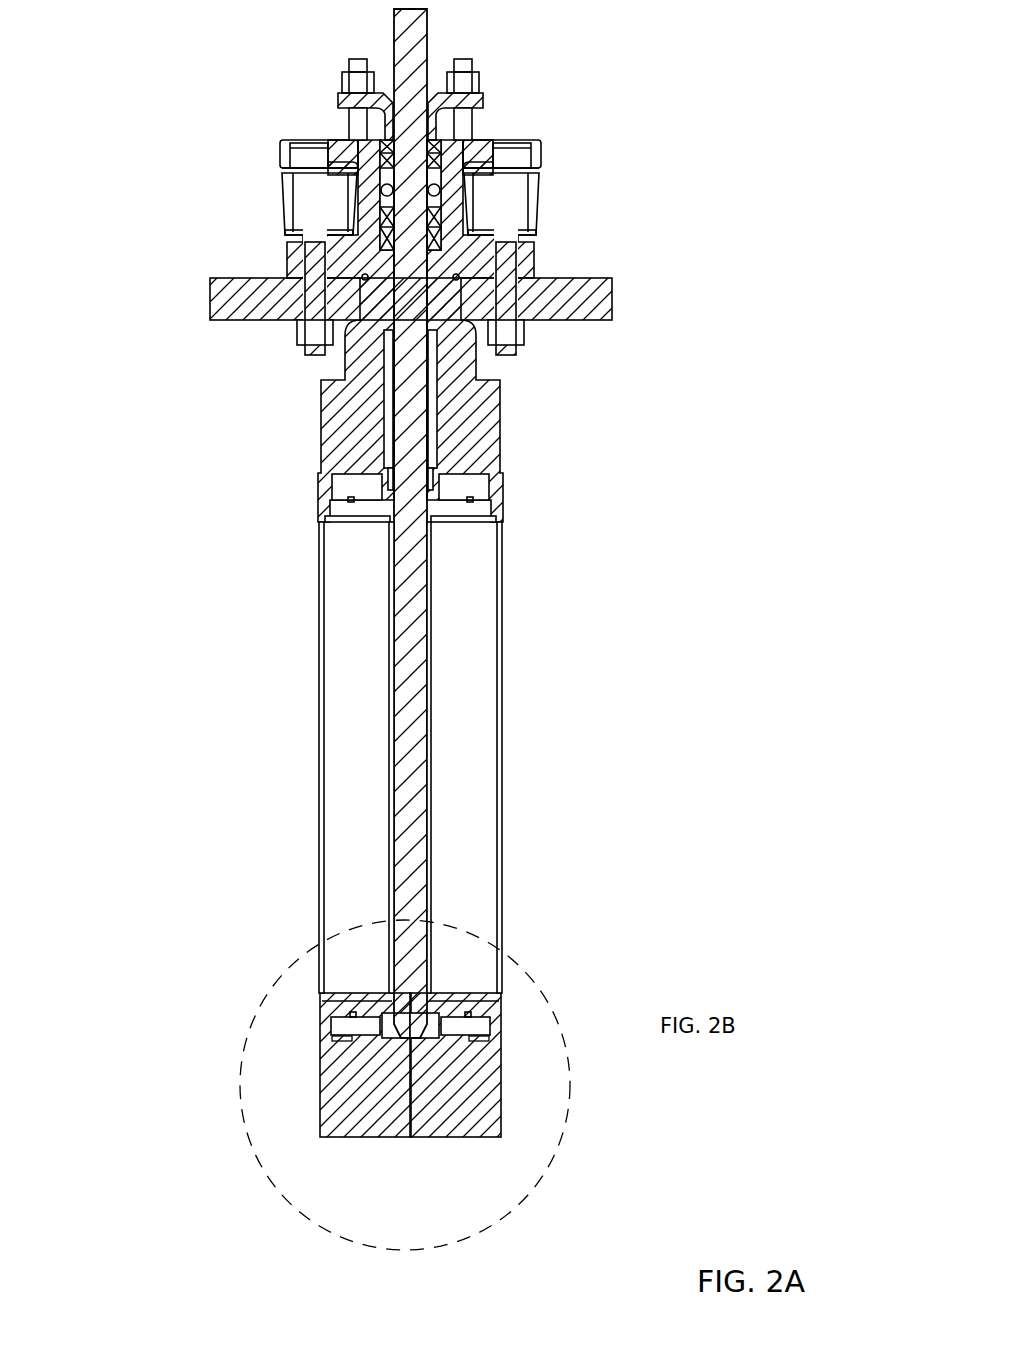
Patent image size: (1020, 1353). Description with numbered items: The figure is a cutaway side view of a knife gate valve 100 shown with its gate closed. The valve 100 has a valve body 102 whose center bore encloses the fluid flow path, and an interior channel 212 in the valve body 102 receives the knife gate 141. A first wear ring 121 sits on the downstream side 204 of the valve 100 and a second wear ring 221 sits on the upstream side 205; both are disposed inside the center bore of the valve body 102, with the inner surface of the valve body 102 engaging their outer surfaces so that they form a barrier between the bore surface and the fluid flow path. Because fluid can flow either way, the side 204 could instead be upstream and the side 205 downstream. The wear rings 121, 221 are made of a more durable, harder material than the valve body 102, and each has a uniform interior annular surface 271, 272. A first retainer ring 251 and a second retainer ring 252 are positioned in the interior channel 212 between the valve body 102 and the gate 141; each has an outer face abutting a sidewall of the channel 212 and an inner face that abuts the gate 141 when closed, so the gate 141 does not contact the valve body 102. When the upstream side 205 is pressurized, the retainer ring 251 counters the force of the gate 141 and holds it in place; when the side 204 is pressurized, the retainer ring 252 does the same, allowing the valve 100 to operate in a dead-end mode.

The valve 100 is at (222, 146).
The valve body 102 is at (330, 428).
The first wear ring 121 is at (328, 512).
The knife gate 141 is at (410, 845).
The downstream side 204 is at (223, 580).
The upstream side 205 is at (657, 510).
The interior channel 212 is at (400, 1042).
The second wear ring 221 is at (488, 505).
The first retainer ring 251 is at (338, 1043).
The second retainer ring 252 is at (440, 1040).
The interior annular surface 271 is at (350, 640).
The interior annular surface 272 is at (472, 760).